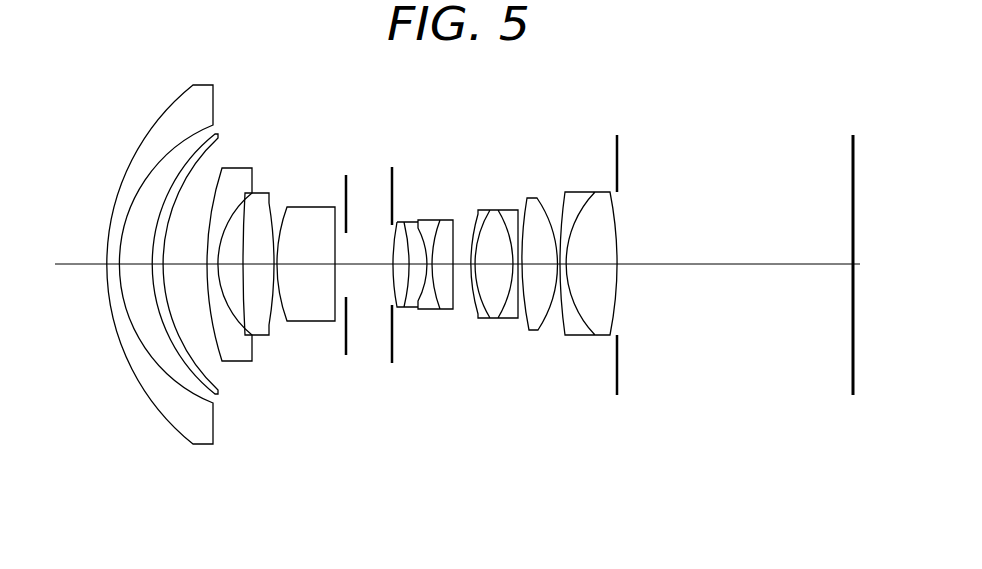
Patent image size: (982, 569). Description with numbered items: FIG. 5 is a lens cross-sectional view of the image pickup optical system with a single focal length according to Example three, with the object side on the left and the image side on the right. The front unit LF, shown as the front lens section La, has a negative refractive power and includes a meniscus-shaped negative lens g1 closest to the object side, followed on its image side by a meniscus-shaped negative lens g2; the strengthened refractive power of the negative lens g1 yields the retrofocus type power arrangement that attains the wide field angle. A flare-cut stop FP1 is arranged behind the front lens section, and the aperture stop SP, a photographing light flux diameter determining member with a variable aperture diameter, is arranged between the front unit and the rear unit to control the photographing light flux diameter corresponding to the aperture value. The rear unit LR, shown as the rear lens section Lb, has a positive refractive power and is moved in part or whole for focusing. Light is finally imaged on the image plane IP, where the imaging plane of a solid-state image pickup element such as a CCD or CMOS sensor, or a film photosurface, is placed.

The negative lens g1 is at (176, 108).
The negative lens g2 is at (207, 155).
The aperture stop SP is at (386, 170).
The flare-cut stop FP1 is at (346, 346).
The image plane IP is at (846, 167).